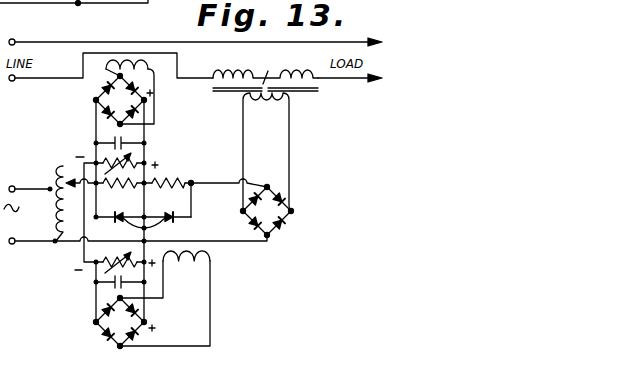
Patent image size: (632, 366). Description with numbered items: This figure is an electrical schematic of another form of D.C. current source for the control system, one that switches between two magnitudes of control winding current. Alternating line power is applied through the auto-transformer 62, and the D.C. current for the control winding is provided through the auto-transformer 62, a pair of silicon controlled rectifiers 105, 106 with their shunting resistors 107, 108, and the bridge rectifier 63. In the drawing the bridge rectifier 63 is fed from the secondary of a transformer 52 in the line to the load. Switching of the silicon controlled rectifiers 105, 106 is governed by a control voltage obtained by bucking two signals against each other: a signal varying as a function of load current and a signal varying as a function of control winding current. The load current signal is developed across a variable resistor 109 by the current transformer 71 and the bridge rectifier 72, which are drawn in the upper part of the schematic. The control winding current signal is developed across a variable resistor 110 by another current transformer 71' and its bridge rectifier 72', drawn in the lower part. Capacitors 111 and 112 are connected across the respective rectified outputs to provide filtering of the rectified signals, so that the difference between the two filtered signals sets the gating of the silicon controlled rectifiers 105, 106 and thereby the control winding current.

The transformer 52 is at (265, 130).
The auto-transformer 62 is at (52, 202).
The bridge rectifier 63 is at (293, 211).
The current transformer 71 is at (151, 92).
The current transformer 71' is at (193, 298).
The bridge rectifier 72 is at (99, 100).
The bridge rectifier 72' is at (102, 322).
The silicon controlled rectifier 105 is at (117, 224).
The silicon controlled rectifier 106 is at (176, 223).
The shunting resistor 107 is at (120, 190).
The shunting resistor 108 is at (178, 180).
The variable resistor 109 is at (136, 159).
The variable resistor 110 is at (103, 260).
The capacitor 111 is at (112, 140).
The capacitor 112 is at (112, 284).